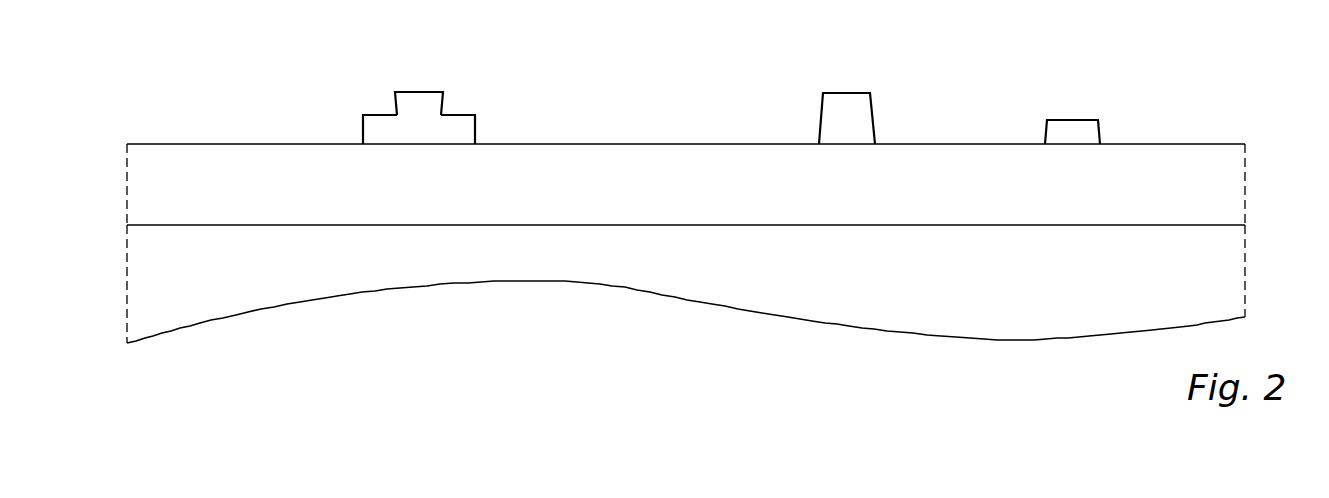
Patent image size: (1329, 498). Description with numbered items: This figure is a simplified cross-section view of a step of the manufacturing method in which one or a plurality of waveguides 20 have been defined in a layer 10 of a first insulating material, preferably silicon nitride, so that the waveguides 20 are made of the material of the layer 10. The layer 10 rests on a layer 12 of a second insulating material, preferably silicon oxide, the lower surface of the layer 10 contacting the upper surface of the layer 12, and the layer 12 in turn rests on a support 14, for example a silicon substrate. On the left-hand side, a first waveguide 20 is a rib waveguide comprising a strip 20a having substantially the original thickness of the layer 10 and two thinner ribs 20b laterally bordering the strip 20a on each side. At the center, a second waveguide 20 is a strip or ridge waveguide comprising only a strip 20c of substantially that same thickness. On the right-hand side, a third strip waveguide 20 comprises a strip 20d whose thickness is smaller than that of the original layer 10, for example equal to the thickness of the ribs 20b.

The layer 10 is at (720, 220).
The layer 12 is at (1227, 188).
The support 14 is at (1227, 268).
The waveguide 20 is at (731, 88).
The strip 20a is at (427, 108).
The ribs 20b is at (366, 128).
The strip 20c is at (862, 117).
The strip 20d is at (1088, 130).